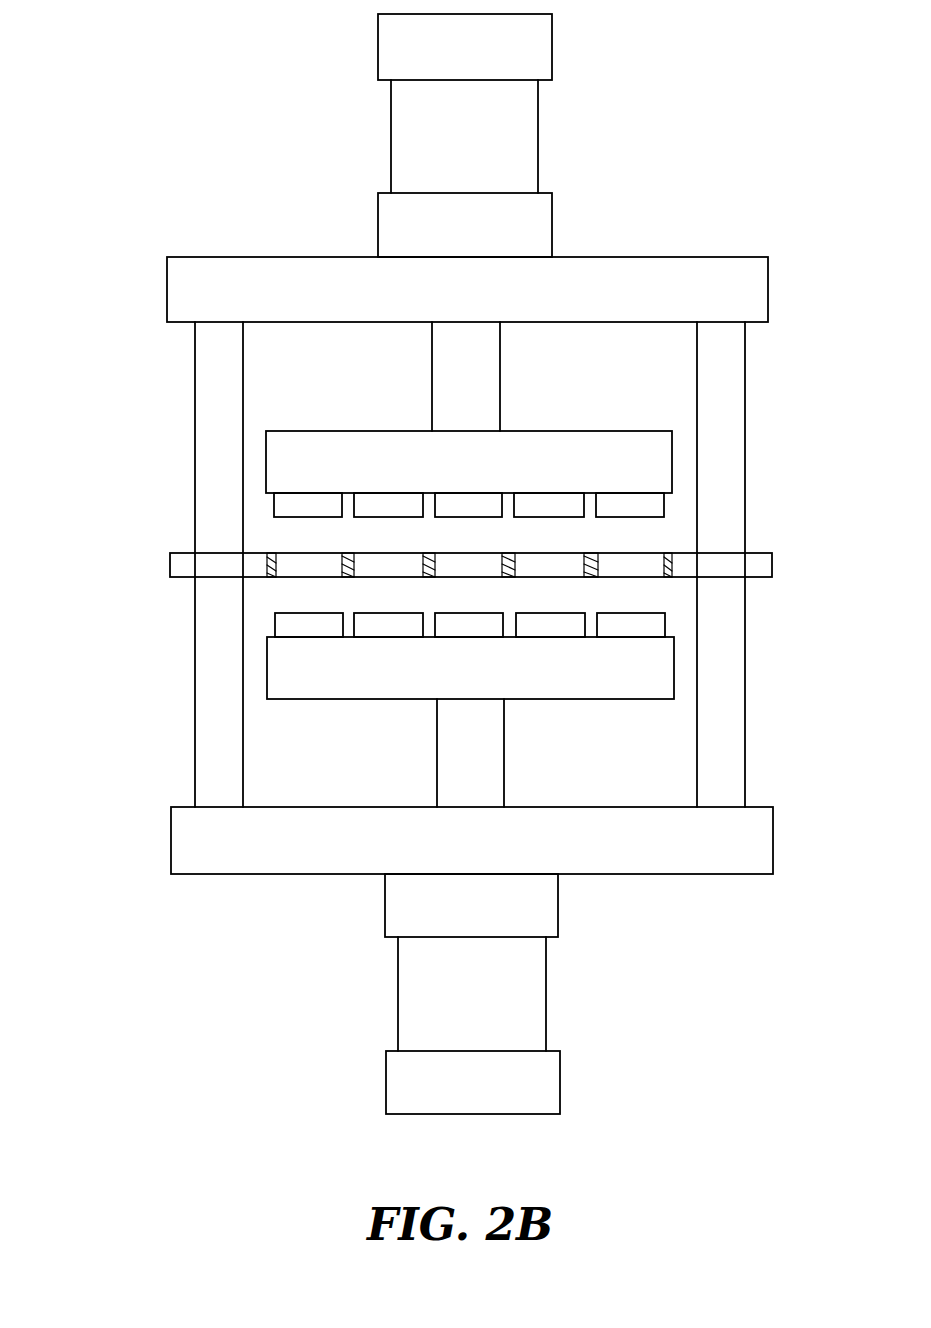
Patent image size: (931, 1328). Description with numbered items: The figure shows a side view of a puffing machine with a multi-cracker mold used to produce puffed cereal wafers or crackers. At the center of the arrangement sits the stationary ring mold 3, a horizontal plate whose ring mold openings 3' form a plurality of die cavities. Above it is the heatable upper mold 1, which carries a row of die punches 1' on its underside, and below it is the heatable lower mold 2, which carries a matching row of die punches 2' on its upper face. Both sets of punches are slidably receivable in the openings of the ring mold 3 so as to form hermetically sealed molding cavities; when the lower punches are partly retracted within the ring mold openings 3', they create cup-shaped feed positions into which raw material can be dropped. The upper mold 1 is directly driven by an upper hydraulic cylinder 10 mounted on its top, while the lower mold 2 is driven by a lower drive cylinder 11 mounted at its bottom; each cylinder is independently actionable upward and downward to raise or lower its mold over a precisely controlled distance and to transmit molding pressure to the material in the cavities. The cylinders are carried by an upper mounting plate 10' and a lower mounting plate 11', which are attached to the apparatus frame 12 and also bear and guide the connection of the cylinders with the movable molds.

The upper hydraulic cylinder 10 is at (426, 135).
The mounting plate 10' is at (417, 289).
The apparatus frame 12 is at (200, 351).
The upper mold 1 is at (396, 452).
The die punches 1' is at (387, 490).
The ring mold 3 is at (489, 535).
The ring mold openings 3' is at (542, 593).
The die punches 2' is at (387, 610).
The lower mold 2 is at (397, 667).
The mounting plate 11' is at (421, 840).
The lower drive cylinder 11 is at (432, 994).